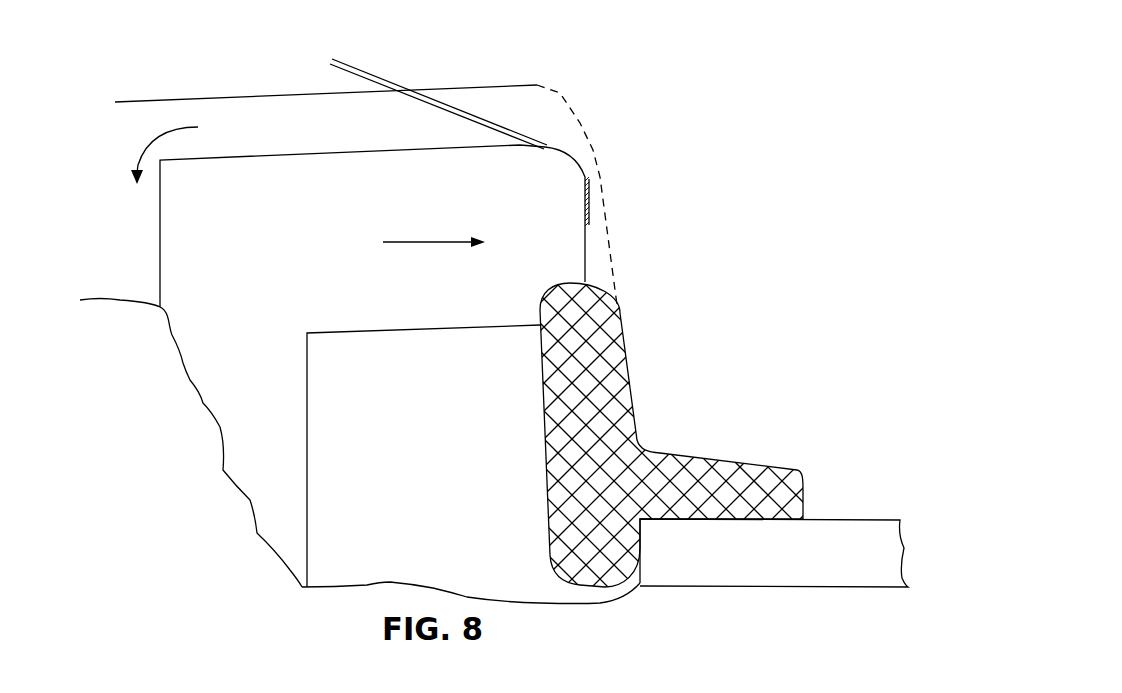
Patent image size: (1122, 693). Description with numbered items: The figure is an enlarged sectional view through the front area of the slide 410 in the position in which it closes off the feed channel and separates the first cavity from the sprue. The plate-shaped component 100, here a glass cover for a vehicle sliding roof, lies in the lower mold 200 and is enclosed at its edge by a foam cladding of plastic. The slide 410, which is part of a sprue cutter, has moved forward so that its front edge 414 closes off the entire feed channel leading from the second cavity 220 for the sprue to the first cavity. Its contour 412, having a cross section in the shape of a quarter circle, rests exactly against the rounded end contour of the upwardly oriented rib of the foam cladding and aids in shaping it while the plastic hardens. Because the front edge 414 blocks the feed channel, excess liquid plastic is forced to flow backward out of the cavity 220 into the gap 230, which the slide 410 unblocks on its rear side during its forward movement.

The plate-shaped component 100 is at (827, 550).
The mold 200 is at (343, 567).
The second cavity 220 is at (397, 118).
The gap 230 is at (118, 275).
The slide 410 is at (562, 227).
The contour 412 is at (588, 278).
The front edge 414 is at (582, 176).